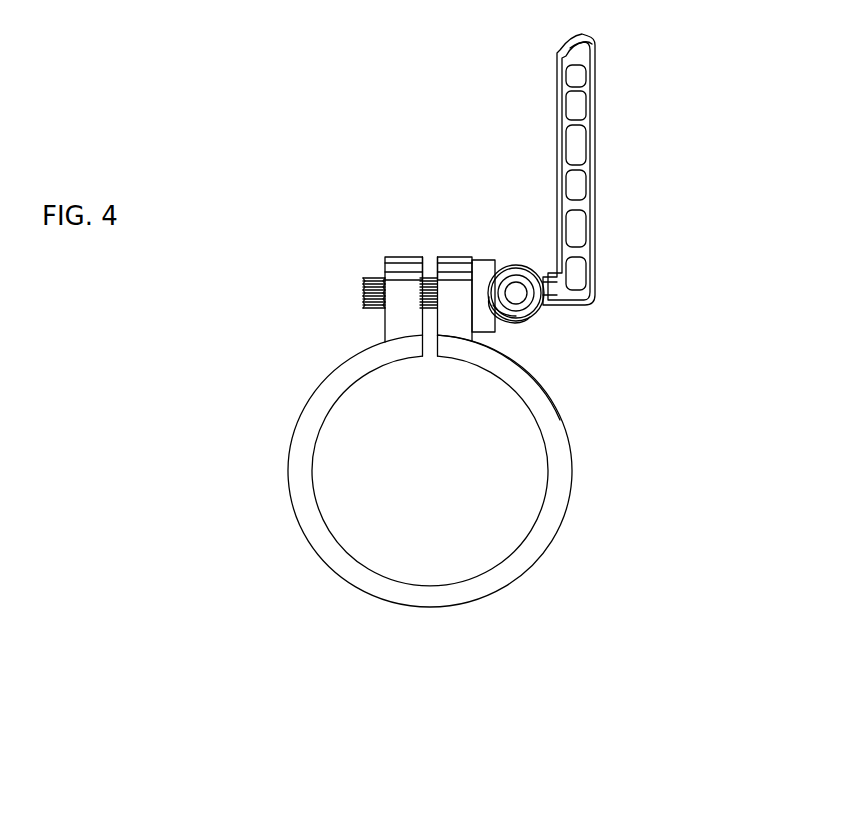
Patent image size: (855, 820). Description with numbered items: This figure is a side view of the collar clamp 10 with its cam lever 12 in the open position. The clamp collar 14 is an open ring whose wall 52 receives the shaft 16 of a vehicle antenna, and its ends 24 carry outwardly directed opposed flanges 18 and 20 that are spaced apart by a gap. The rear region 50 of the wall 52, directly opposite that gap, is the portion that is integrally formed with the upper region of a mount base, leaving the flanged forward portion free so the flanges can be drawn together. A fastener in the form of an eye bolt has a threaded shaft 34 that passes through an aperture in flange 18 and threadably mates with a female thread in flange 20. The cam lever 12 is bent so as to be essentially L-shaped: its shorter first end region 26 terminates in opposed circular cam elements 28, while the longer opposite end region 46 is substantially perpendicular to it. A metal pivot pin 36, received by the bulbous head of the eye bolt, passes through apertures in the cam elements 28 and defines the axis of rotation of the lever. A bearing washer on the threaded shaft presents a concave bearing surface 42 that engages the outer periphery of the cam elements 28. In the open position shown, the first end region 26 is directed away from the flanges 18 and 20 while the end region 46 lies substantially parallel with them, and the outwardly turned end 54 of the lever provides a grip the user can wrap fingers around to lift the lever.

The collar clamp 10 is at (192, 379).
The cam lever 12 is at (588, 169).
The clamp collar 14 is at (557, 473).
The shaft 16 is at (394, 171).
The flange 18 is at (450, 259).
The flange 20 is at (407, 255).
The ends of the collar 24 is at (417, 347).
The first end region 26 is at (563, 315).
The cam elements 28 is at (520, 265).
The threaded shaft 34 is at (366, 262).
The pivot pin 36 is at (538, 300).
The bearing surface 42 is at (525, 292).
The opposite end region 46 is at (595, 197).
The rear region 50 is at (412, 582).
The wall 52 is at (520, 563).
The outwardly turned end 54 is at (577, 36).